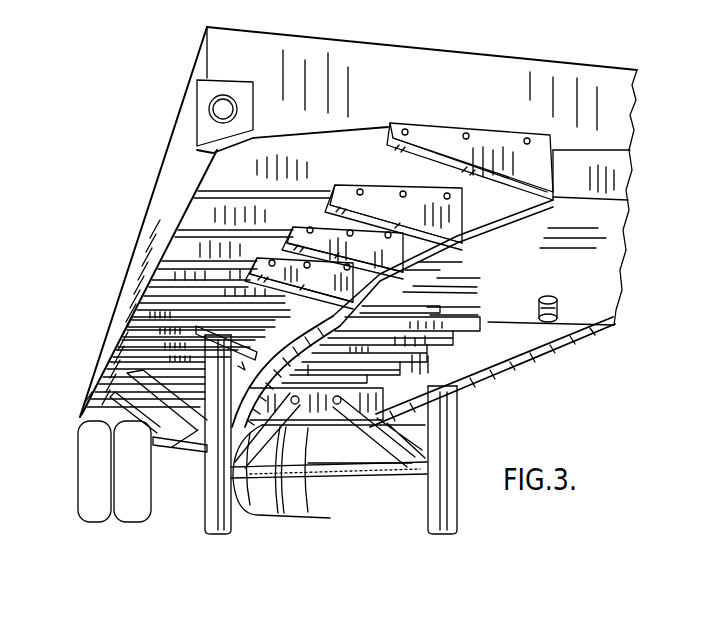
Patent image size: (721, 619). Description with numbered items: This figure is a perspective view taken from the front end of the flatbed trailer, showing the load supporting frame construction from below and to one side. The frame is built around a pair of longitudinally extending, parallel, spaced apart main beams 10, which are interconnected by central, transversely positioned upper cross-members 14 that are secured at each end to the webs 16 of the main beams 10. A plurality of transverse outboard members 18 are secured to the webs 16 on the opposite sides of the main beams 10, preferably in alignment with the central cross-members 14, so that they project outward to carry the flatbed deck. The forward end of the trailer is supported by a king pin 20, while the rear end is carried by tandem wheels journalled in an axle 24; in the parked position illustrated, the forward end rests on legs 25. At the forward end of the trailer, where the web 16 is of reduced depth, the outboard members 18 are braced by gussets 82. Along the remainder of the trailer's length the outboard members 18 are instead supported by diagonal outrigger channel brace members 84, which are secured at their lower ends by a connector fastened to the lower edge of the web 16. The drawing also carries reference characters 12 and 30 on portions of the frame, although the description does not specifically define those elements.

The main beam 10 is at (300, 308).
The support leg 12 is at (458, 400).
The upper cross-member 14 is at (497, 358).
The web 16 is at (463, 350).
The transverse outboard member 18 is at (223, 168).
The king pin 20 is at (557, 307).
The axle 24 is at (177, 457).
The leg 25 is at (425, 497).
The longitudinal beam 30 is at (482, 203).
The gusset 82 is at (433, 133).
The diagonal outrigger channel brace member 84 is at (87, 398).